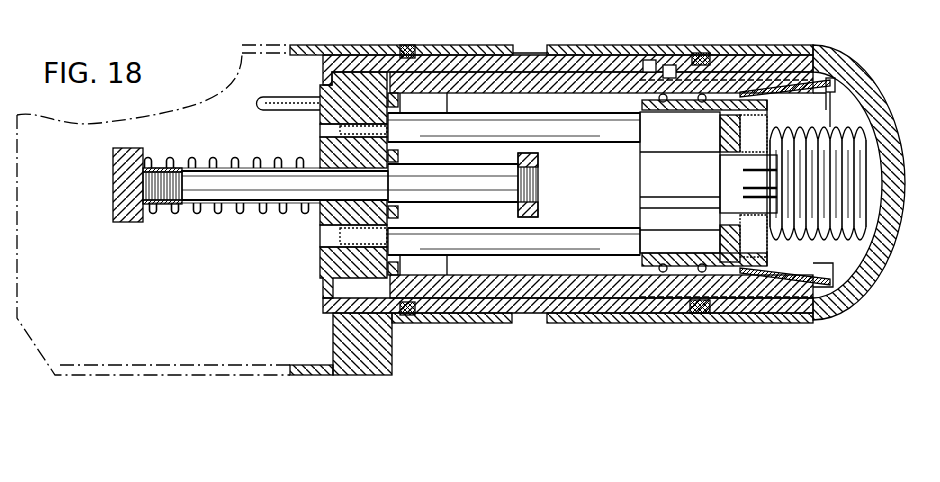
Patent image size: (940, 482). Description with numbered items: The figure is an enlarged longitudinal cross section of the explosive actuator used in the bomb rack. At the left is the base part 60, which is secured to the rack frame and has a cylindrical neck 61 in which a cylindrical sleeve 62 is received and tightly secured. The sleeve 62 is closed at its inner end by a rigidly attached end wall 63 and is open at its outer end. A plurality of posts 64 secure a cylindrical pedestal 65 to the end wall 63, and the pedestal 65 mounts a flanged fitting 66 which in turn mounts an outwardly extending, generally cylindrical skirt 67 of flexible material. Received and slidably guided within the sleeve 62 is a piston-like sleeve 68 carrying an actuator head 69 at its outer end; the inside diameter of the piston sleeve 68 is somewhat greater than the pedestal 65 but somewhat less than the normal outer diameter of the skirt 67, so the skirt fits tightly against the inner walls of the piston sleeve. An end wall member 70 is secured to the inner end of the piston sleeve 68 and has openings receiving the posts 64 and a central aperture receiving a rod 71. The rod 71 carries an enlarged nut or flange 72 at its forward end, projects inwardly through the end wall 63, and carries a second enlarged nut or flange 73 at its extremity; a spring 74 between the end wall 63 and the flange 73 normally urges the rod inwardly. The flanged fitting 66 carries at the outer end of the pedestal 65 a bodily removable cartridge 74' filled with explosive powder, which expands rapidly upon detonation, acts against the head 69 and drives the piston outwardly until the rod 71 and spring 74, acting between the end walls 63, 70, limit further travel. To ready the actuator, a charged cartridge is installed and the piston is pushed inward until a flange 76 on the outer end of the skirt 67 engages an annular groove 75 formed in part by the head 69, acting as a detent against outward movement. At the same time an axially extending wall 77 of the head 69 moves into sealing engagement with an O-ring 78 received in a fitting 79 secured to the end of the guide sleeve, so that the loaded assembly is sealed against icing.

The base part 60 is at (383, 355).
The cylindrical neck 61 is at (473, 325).
The cylindrical sleeve 62 is at (528, 312).
The end wall 63 is at (320, 272).
The posts 64 is at (568, 125).
The pedestal 65 is at (650, 167).
The flanged fitting 66 is at (722, 132).
The skirt 67 is at (787, 97).
The piston-like sleeve 68 is at (583, 82).
The actuator head 69 is at (893, 140).
The end wall member 70 is at (420, 87).
The rod 71 is at (443, 177).
The enlarged nut or flange 72 is at (540, 207).
The enlarged nut or flange 73 is at (125, 223).
The spring 74 is at (233, 209).
The cartridge 74' is at (818, 198).
The annular groove 75 is at (835, 97).
The flange 76 is at (833, 80).
The axially extending wall 77 is at (683, 67).
The O-ring 78 is at (708, 54).
The fitting 79 is at (643, 53).